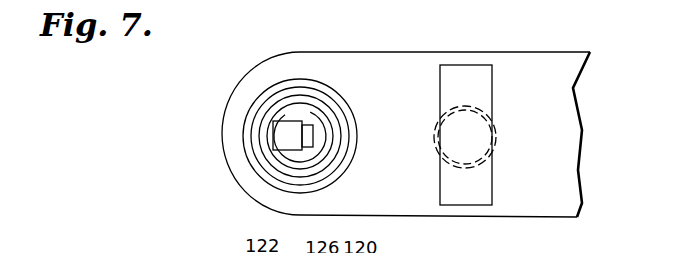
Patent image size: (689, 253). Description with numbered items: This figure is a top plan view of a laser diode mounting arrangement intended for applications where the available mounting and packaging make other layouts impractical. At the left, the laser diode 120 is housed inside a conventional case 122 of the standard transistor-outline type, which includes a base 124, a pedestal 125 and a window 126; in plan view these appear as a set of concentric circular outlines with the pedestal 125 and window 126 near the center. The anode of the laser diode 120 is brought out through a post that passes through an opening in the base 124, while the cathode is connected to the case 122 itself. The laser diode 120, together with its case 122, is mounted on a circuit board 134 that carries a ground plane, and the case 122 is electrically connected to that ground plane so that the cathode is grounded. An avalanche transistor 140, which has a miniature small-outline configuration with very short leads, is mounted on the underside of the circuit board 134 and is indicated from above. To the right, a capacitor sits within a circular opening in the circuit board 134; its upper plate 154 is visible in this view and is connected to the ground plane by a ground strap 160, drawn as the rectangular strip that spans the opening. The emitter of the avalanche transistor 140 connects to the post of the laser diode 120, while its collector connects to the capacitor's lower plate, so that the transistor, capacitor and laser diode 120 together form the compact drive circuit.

The laser diode 120 is at (310, 123).
The T-05 case 122 is at (275, 108).
The base 124 is at (250, 155).
The pedestal 125 is at (278, 135).
The window 126 is at (323, 127).
The circuit board 134 is at (443, 51).
The avalanche transistor 140 is at (366, 0).
The upper plate 154 is at (473, 133).
The ground strap 160 is at (467, 197).